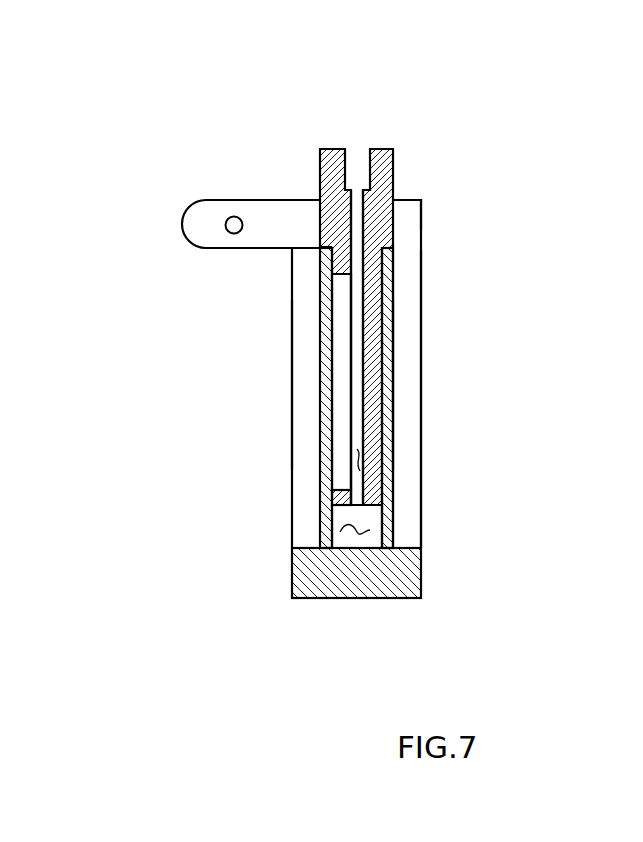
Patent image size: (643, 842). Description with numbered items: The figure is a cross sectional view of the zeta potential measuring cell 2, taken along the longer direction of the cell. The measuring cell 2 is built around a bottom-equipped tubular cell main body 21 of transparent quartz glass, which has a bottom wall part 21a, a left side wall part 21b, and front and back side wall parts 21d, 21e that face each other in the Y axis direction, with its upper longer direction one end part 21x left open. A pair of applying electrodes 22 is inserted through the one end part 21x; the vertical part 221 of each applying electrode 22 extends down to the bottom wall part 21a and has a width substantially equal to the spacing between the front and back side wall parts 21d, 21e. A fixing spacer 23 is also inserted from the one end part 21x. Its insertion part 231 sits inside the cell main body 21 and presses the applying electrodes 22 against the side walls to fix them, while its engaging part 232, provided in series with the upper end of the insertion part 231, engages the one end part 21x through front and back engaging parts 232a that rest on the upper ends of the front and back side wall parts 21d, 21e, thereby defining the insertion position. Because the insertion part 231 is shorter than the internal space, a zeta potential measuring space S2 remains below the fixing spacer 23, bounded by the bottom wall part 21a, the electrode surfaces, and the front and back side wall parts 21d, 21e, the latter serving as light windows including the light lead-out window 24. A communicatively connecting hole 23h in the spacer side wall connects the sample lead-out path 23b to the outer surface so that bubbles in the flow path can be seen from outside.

The measuring cell 2 is at (222, 83).
The cell main body 21 is at (292, 272).
The bottom wall part 21a is at (396, 600).
The left side wall part 21b is at (421, 368).
The front side wall part 21d is at (320, 384).
The back side wall part 21e is at (393, 428).
The longer direction one end part 21x is at (440, 193).
The applying electrode 22 is at (182, 225).
The fixing spacer 23 is at (520, 218).
The insertion part 231 is at (383, 340).
The engaging part 232 is at (394, 214).
The front and back engaging parts 232a is at (391, 240).
The vertical part 221 is at (333, 514).
The sample lead-out path 23b is at (362, 460).
The communicatively connecting hole 23h is at (330, 436).
The light lead-out window 24 is at (404, 535).
The zeta potential measuring space S2 is at (352, 540).